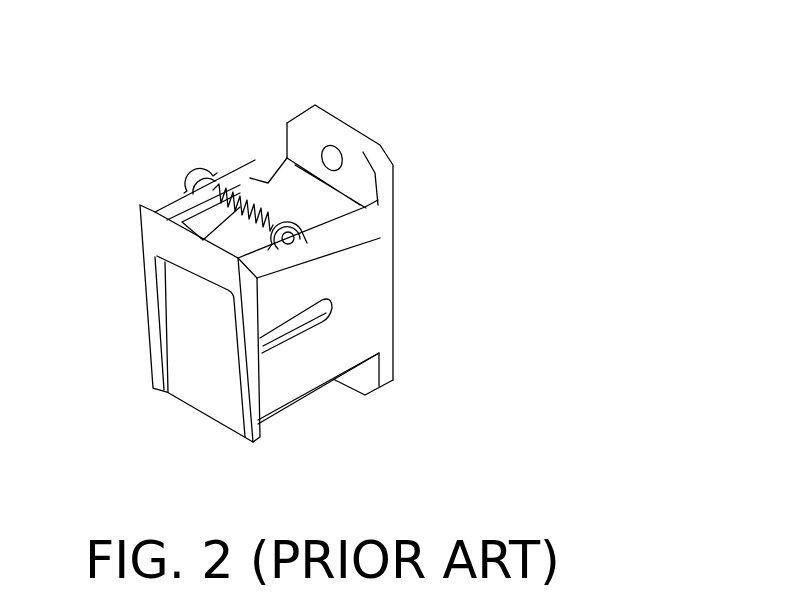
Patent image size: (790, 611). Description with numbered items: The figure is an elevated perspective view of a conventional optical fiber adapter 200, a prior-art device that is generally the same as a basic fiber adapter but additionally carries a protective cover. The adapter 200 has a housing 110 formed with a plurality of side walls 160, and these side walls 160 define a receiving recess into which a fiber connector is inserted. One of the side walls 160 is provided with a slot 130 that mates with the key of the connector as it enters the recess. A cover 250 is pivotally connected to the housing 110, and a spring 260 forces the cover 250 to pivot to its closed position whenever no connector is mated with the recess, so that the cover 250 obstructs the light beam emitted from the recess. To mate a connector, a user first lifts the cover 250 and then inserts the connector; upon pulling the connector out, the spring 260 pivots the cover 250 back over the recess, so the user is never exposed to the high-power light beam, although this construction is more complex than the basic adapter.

The conventional fiber adapter 200 is at (375, 115).
The housing 110 is at (265, 162).
The slot 130 is at (300, 323).
The side walls 160 is at (280, 390).
The cover 250 is at (187, 352).
The spring 260 is at (247, 205).